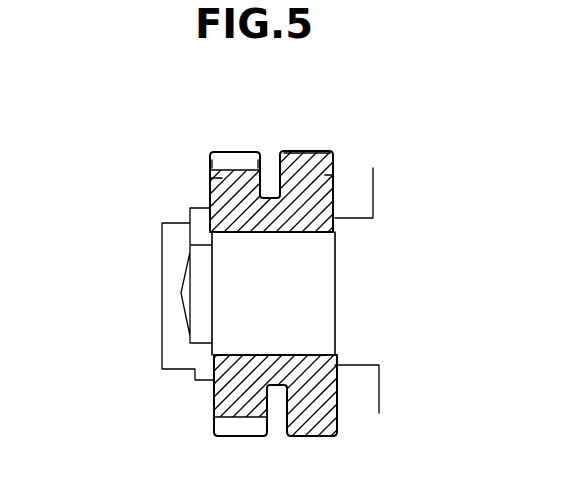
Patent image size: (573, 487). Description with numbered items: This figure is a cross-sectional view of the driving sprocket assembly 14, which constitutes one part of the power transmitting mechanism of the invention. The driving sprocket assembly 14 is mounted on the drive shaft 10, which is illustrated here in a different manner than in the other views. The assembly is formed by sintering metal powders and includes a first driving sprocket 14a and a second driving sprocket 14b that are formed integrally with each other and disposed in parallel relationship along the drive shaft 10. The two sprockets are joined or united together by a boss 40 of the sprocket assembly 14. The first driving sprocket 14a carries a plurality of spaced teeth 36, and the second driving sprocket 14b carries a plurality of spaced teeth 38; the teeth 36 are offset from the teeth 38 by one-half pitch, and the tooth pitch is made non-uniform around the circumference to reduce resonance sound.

The drive shaft 10 is at (315, 323).
The driving sprocket assembly 14 is at (190, 186).
The first driving sprocket 14a is at (213, 178).
The second driving sprocket 14b is at (335, 175).
The teeth 36 is at (230, 151).
The teeth 38 is at (308, 150).
The boss 40 is at (272, 233).